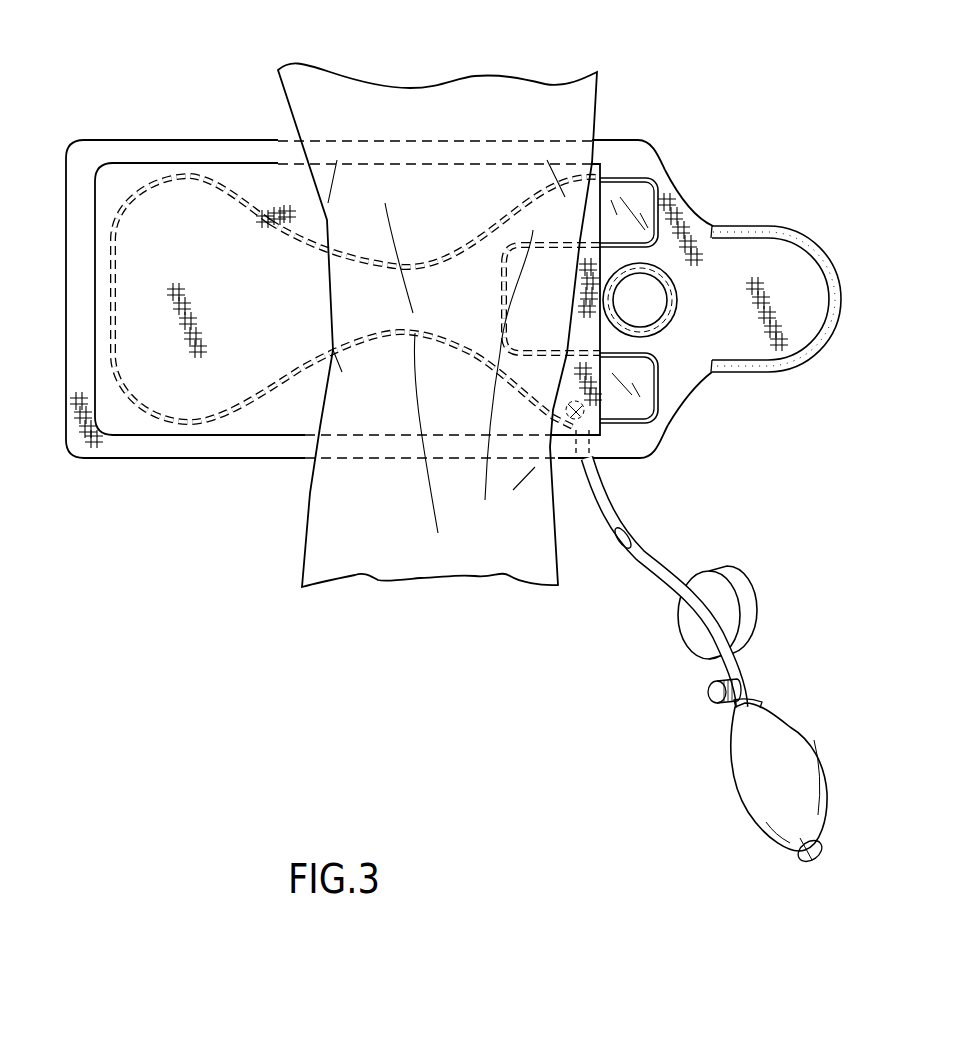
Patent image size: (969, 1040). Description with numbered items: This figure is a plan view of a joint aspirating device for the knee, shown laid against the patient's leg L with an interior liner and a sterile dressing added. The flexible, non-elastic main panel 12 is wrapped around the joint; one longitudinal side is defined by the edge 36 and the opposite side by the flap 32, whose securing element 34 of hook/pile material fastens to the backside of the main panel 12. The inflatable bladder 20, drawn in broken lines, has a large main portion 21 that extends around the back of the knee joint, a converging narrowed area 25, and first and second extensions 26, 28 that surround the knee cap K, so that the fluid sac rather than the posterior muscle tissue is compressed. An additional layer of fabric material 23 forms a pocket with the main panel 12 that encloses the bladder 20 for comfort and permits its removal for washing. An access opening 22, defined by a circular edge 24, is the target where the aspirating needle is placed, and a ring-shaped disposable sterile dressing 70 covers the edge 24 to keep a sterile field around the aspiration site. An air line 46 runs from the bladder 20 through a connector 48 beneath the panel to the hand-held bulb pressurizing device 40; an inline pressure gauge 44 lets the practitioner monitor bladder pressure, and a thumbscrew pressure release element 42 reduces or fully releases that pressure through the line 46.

The main panel 12 is at (96, 155).
The bladder 20 is at (665, 160).
The main portion 21 is at (220, 377).
The access opening 22 is at (645, 315).
The layer of fabric material 23 is at (262, 292).
The circular edge 24 is at (645, 283).
The narrowed area 25 is at (424, 262).
The first extension 26 is at (640, 197).
The second extension 28 is at (647, 393).
The flap 32 is at (755, 250).
The securing element 34 is at (835, 280).
The edge 36 is at (65, 332).
The pressurizing device 40 is at (810, 743).
The pressure release element 42 is at (715, 697).
The inline pressure gauge 44 is at (757, 612).
The air line 46 is at (652, 552).
The connector 48 is at (580, 407).
The sterile dressing 70 is at (662, 310).
The leg L is at (520, 107).
The knee cap K is at (457, 290).